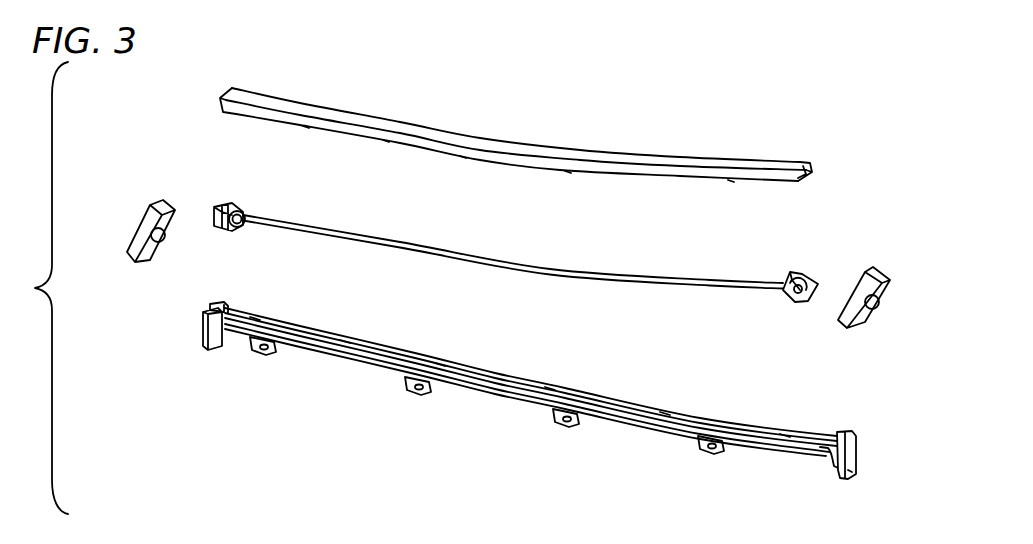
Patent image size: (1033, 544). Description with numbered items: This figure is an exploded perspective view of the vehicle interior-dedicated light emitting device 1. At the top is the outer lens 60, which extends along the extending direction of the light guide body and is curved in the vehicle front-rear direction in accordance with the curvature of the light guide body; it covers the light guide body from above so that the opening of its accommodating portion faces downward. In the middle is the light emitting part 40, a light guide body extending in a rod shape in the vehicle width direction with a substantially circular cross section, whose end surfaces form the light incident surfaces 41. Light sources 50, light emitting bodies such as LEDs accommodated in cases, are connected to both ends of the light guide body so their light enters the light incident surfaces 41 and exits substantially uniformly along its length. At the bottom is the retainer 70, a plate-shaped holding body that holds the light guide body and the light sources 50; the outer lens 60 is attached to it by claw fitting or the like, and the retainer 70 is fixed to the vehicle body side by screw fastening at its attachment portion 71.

The vehicle interior-dedicated light emitting device 1 is at (801, 131).
The outer lens 60 is at (500, 145).
The light emitting part 40 is at (440, 253).
The light incident surface 41 is at (810, 283).
The light source 50 is at (150, 220).
The retainer 70 is at (497, 393).
The attachment portion 71 is at (707, 444).